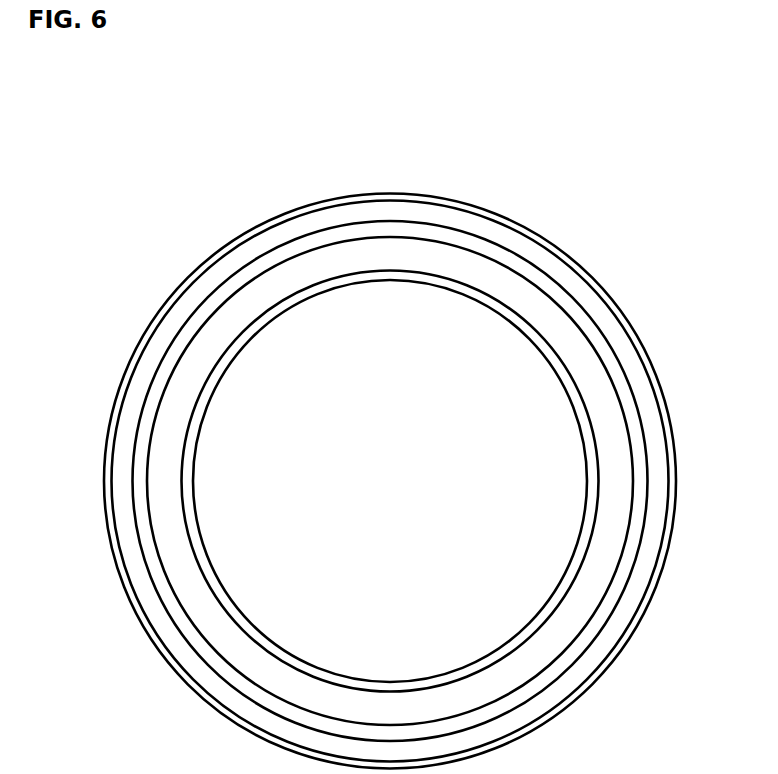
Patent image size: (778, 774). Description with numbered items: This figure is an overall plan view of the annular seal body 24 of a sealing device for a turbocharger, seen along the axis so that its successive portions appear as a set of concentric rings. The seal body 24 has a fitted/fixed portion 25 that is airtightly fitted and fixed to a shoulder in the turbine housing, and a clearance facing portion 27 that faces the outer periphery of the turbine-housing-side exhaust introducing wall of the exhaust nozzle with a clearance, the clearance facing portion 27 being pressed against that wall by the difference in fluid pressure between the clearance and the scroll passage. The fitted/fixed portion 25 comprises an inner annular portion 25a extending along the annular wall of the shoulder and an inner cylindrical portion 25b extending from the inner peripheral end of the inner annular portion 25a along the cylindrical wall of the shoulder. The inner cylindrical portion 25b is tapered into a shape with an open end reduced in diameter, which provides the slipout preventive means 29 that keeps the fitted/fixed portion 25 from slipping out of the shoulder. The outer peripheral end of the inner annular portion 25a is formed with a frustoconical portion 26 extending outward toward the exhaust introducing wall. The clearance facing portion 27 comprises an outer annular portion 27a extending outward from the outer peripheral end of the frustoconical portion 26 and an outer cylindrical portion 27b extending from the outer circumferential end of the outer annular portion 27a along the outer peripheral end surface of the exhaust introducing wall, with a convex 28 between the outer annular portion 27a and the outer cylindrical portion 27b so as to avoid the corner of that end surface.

The seal body 24 is at (295, 201).
The fitted/fixed portion 25 is at (610, 472).
The inner annular portion 25a is at (427, 258).
The inner cylindrical portion 25b is at (377, 280).
The frustoconical portion 26 is at (409, 233).
The clearance facing portion 27 is at (560, 241).
The outer annular portion 27a is at (363, 213).
The outer cylindrical portion 27b is at (583, 267).
The convex 28 is at (350, 202).
The slipout preventive means 29 is at (270, 330).